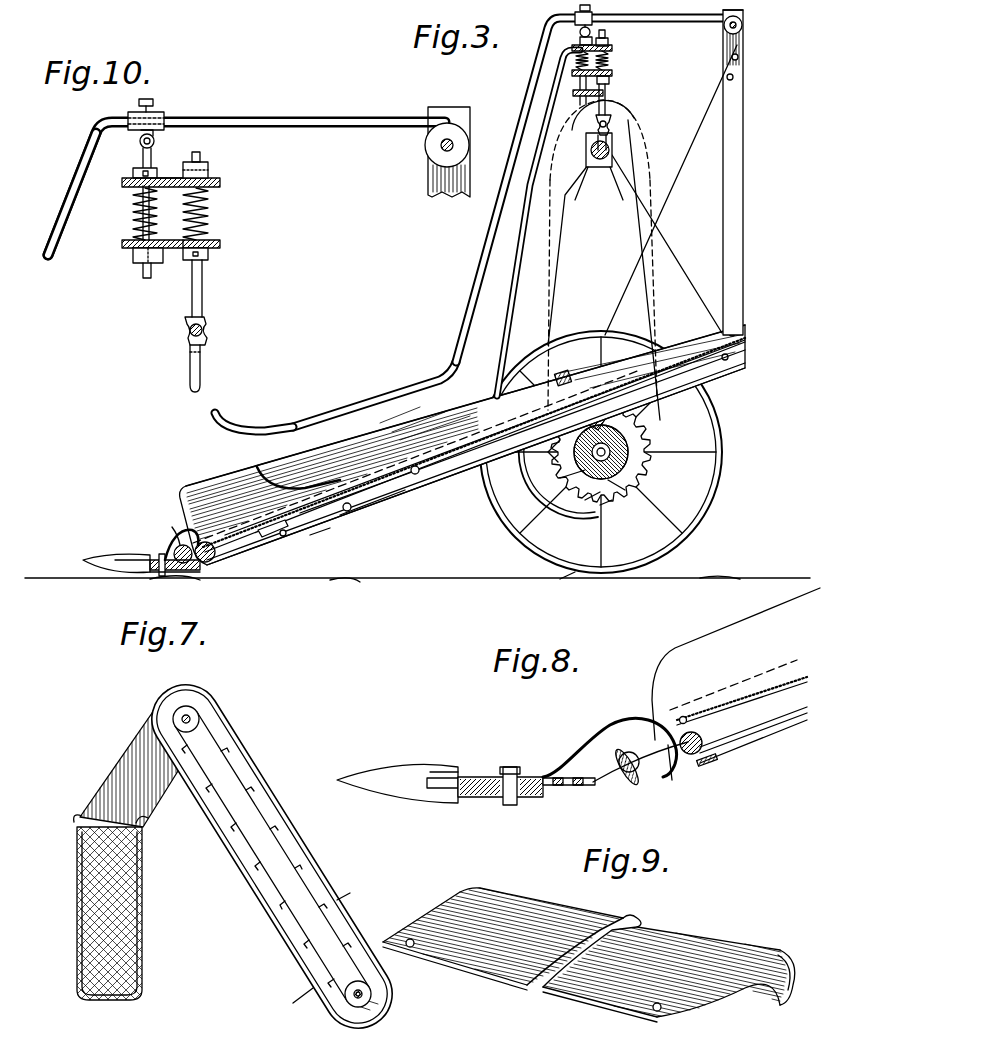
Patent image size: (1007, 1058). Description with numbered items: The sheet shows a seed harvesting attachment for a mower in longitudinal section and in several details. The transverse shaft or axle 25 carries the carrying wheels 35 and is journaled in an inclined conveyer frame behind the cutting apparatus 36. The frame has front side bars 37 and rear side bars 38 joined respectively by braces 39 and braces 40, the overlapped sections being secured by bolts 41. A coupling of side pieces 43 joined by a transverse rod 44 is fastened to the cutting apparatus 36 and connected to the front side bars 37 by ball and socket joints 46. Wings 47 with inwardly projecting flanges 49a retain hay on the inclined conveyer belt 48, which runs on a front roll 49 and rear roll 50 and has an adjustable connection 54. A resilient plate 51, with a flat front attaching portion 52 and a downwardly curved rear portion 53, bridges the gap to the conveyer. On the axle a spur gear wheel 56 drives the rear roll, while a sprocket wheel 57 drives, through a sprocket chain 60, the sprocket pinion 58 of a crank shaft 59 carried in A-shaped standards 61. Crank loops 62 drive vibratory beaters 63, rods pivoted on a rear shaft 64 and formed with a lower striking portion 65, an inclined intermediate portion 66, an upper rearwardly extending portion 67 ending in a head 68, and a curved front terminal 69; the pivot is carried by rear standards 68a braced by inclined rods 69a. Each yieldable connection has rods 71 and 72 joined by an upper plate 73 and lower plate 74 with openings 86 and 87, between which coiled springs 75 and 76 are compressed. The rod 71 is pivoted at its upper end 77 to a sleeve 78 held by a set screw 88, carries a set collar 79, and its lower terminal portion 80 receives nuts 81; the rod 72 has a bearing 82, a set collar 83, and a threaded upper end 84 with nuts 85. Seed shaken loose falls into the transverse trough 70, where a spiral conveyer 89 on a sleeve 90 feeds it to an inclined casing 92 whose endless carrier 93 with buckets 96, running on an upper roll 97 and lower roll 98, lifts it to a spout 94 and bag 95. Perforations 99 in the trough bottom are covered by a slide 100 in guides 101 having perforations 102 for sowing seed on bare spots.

In FIG. 3, the transverse shaft or axle 25 is at (610, 458).
In FIG. 7, the transverse shaft or axle 25 is at (356, 1008).
In FIG. 3, the carrying wheels 35 is at (713, 490).
In FIG. 3, the cutting apparatus 36 is at (106, 558).
In FIG. 8, the cutting apparatus 36 is at (397, 774).
In FIG. 3, the front side bars 37 is at (443, 490).
In FIG. 8, the front side bars 37 is at (657, 748).
In FIG. 3, the rear side bars 38 is at (710, 365).
In FIG. 3, the braces 39 is at (230, 557).
In FIG. 8, the braces 39 is at (707, 763).
In FIG. 3, the braces 40 is at (390, 498).
In FIG. 3, the bolts 41 is at (415, 463).
In FIG. 3, the side pieces or members 43 is at (160, 550).
In FIG. 8, the side pieces or members 43 is at (577, 744).
In FIG. 3, the transverse rod or bar 44 is at (160, 571).
In FIG. 8, the transverse rod or bar 44 is at (583, 787).
In FIG. 3, the ball and socket joints 46 is at (178, 568).
In FIG. 8, the ball and socket joints 46 is at (640, 777).
In FIG. 3, the wings 47 is at (217, 479).
In FIG. 8, the wings 47 is at (703, 640).
In FIG. 3, the inclined conveyer belt 48 is at (460, 441).
In FIG. 8, the inclined conveyer belt 48 is at (737, 740).
In FIG. 3, the front transverse roll 49 is at (202, 565).
In FIG. 8, the front transverse roll 49 is at (690, 757).
In FIG. 3, the inwardly projecting flanges 49a is at (234, 522).
In FIG. 8, the inwardly projecting flanges 49a is at (743, 697).
In FIG. 3, the rear transverse roll 50 is at (570, 368).
In FIG. 3, the plate 51 is at (173, 537).
In FIG. 8, the plate 51 is at (632, 716).
In FIG. 9, the plate 51 is at (585, 950).
In FIG. 3, the flat front attaching portion 52 is at (138, 557).
In FIG. 8, the flat front attaching portion 52 is at (501, 775).
In FIG. 9, the flat front attaching portion 52 is at (463, 957).
In FIG. 3, the rear portion 53 is at (175, 523).
In FIG. 8, the rear portion 53 is at (660, 727).
In FIG. 9, the rear portion 53 is at (783, 951).
In FIG. 3, the adjustable connection 54 is at (273, 529).
In FIG. 3, the spur gear wheel 56 is at (542, 470).
In FIG. 3, the sprocket wheel 57 is at (648, 483).
In FIG. 3, the sprocket pinion 58 is at (596, 168).
In FIG. 3, the crank shaft 59 is at (630, 116).
In FIG. 3, the sprocket chain 60 is at (655, 305).
In FIG. 3, the A-shaped standards 61 is at (670, 243).
In FIG. 10, the crank loops 62 is at (185, 335).
In FIG. 3, the crank loops 62 is at (608, 132).
In FIG. 10, the vibratory beaters 63 is at (62, 212).
In FIG. 10, the rear transverse shaft or pivot 64 is at (440, 148).
In FIG. 3, the rear transverse shaft or pivot 64 is at (741, 29).
In FIG. 3, the lower front striking portion 65 is at (348, 408).
In FIG. 10, the inclined intermediate portion 66 is at (84, 170).
In FIG. 3, the inclined intermediate portion 66 is at (526, 207).
In FIG. 10, the upper rearwardly extending portion 67 is at (352, 118).
In FIG. 3, the upper rearwardly extending portion 67 is at (651, 22).
In FIG. 10, the head 68 is at (462, 147).
In FIG. 3, the head 68 is at (742, 22).
In FIG. 10, the rear standards 68a is at (437, 186).
In FIG. 3, the rear standards 68a is at (744, 181).
In FIG. 3, the front terminal 69 is at (232, 413).
In FIG. 3, the inclined rods 69a is at (690, 187).
In FIG. 3, the transverse trough 70 is at (559, 450).
In FIG. 10, the rod or member 71 is at (135, 212).
In FIG. 3, the rod or member 71 is at (574, 60).
In FIG. 10, the rod or member 72 is at (204, 280).
In FIG. 3, the rod or member 72 is at (607, 72).
In FIG. 10, the upper plate 73 is at (220, 185).
In FIG. 3, the upper plate 73 is at (612, 49).
In FIG. 10, the lower plate 74 is at (222, 244).
In FIG. 3, the lower plate 74 is at (613, 73).
In FIG. 10, the coiled spring 75 is at (130, 243).
In FIG. 3, the coiled spring 75 is at (578, 84).
In FIG. 10, the coiled spring 76 is at (215, 218).
In FIG. 3, the coiled spring 76 is at (610, 66).
In FIG. 10, the upper end 77 is at (155, 141).
In FIG. 3, the upper end 77 is at (580, 32).
In FIG. 10, the sleeve 78 is at (163, 120).
In FIG. 3, the sleeve 78 is at (576, 17).
In FIG. 10, the set collar 79 is at (134, 170).
In FIG. 3, the set collar 79 is at (575, 45).
In FIG. 10, the lower terminal portion 80 is at (146, 280).
In FIG. 10, the nuts 81 is at (135, 260).
In FIG. 10, the bearing 82 is at (207, 330).
In FIG. 3, the bearing 82 is at (612, 120).
In FIG. 10, the set collar 83 is at (208, 257).
In FIG. 3, the set collar 83 is at (610, 84).
In FIG. 10, the upper end 84 is at (202, 157).
In FIG. 3, the upper end 84 is at (603, 32).
In FIG. 10, the nuts 85 is at (210, 170).
In FIG. 3, the nuts 85 is at (605, 40).
In FIG. 10, the openings 86 is at (129, 181).
In FIG. 10, the openings 87 is at (182, 252).
In FIG. 10, the set screw 88 is at (137, 103).
In FIG. 3, the set screw 88 is at (590, 8).
In FIG. 3, the spiral conveyer 89 is at (612, 436).
In FIG. 3, the sleeve 90 is at (607, 430).
In FIG. 7, the inclined casing 92 is at (290, 823).
In FIG. 7, the endless carrier 93 is at (307, 885).
In FIG. 7, the spout 94 is at (124, 767).
In FIG. 7, the bag 95 is at (76, 883).
In FIG. 7, the blades or buckets 96 is at (337, 900).
In FIG. 7, the upper roll 97 is at (192, 733).
In FIG. 7, the lower roll 98 is at (358, 988).
In FIG. 3, the perforations 99 is at (593, 513).
In FIG. 3, the slide 100 is at (585, 482).
In FIG. 3, the guides 101 is at (610, 482).
In FIG. 3, the perforations 102 is at (603, 513).